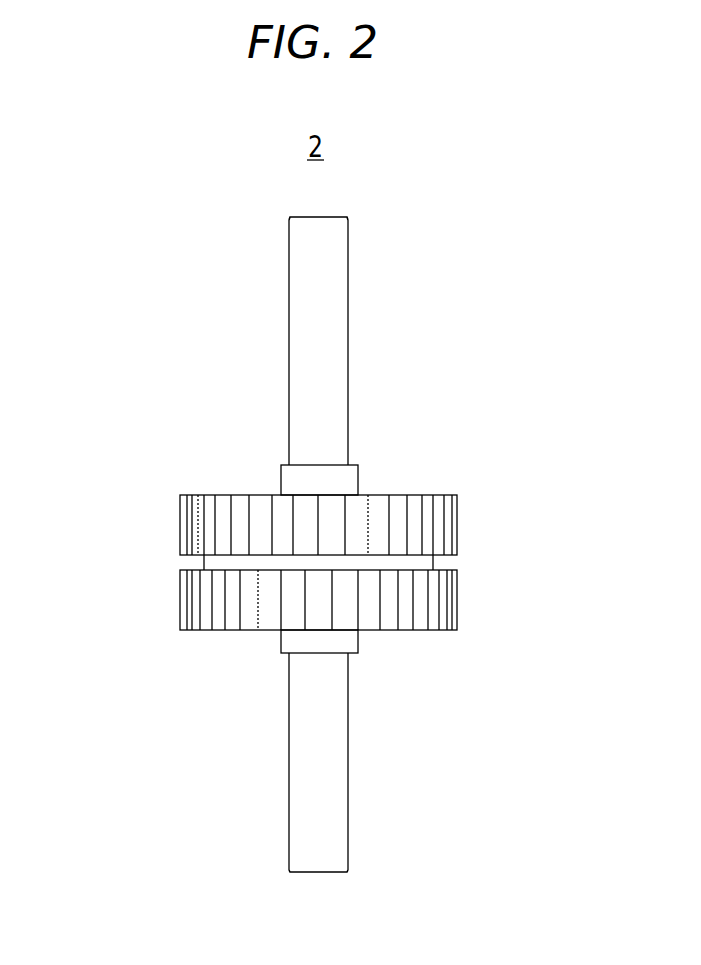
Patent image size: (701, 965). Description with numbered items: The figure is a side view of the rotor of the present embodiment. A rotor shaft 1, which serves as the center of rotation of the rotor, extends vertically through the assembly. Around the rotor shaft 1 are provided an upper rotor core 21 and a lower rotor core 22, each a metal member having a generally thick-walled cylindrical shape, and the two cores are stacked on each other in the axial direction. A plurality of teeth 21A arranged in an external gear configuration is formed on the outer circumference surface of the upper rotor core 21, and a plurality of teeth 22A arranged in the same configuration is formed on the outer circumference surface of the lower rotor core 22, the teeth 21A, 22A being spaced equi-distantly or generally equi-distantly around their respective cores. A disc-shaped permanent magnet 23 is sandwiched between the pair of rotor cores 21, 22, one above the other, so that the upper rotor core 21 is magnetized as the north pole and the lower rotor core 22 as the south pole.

The rotor shaft 1 is at (338, 322).
The upper rotor core 21 is at (359, 479).
The teeth 21A is at (433, 532).
The lower rotor core 22 is at (357, 648).
The teeth 22A is at (399, 638).
The permanent magnet 23 is at (203, 567).